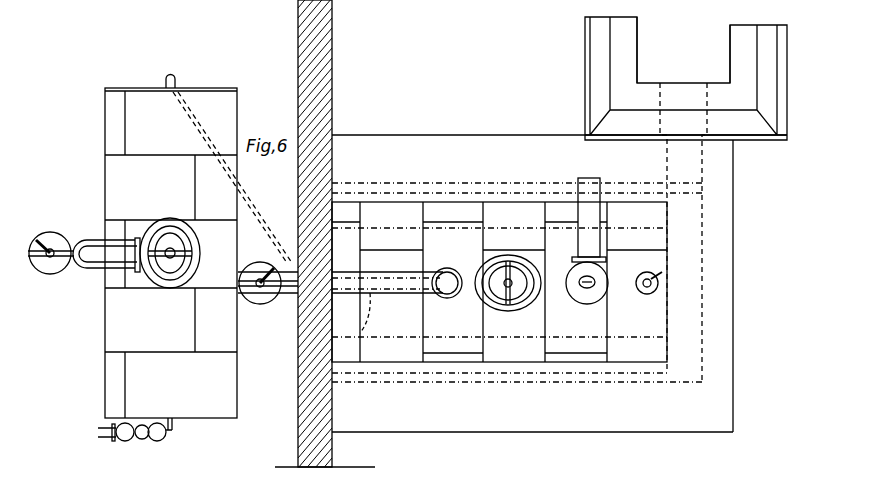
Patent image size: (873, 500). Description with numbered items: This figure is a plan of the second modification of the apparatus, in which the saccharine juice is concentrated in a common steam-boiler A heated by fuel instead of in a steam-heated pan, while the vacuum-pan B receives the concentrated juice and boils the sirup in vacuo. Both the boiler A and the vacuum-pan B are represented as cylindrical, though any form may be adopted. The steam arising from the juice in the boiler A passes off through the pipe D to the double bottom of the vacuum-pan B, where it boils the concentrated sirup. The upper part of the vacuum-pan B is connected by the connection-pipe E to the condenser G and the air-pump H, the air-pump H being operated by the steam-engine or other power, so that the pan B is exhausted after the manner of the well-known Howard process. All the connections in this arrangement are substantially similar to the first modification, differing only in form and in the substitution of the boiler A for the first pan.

The boiler A is at (505, 308).
The vacuum-pan B is at (200, 247).
The pipe D is at (350, 283).
The connection-pipe E is at (82, 253).
The condenser G is at (168, 75).
The air-pump H is at (98, 433).